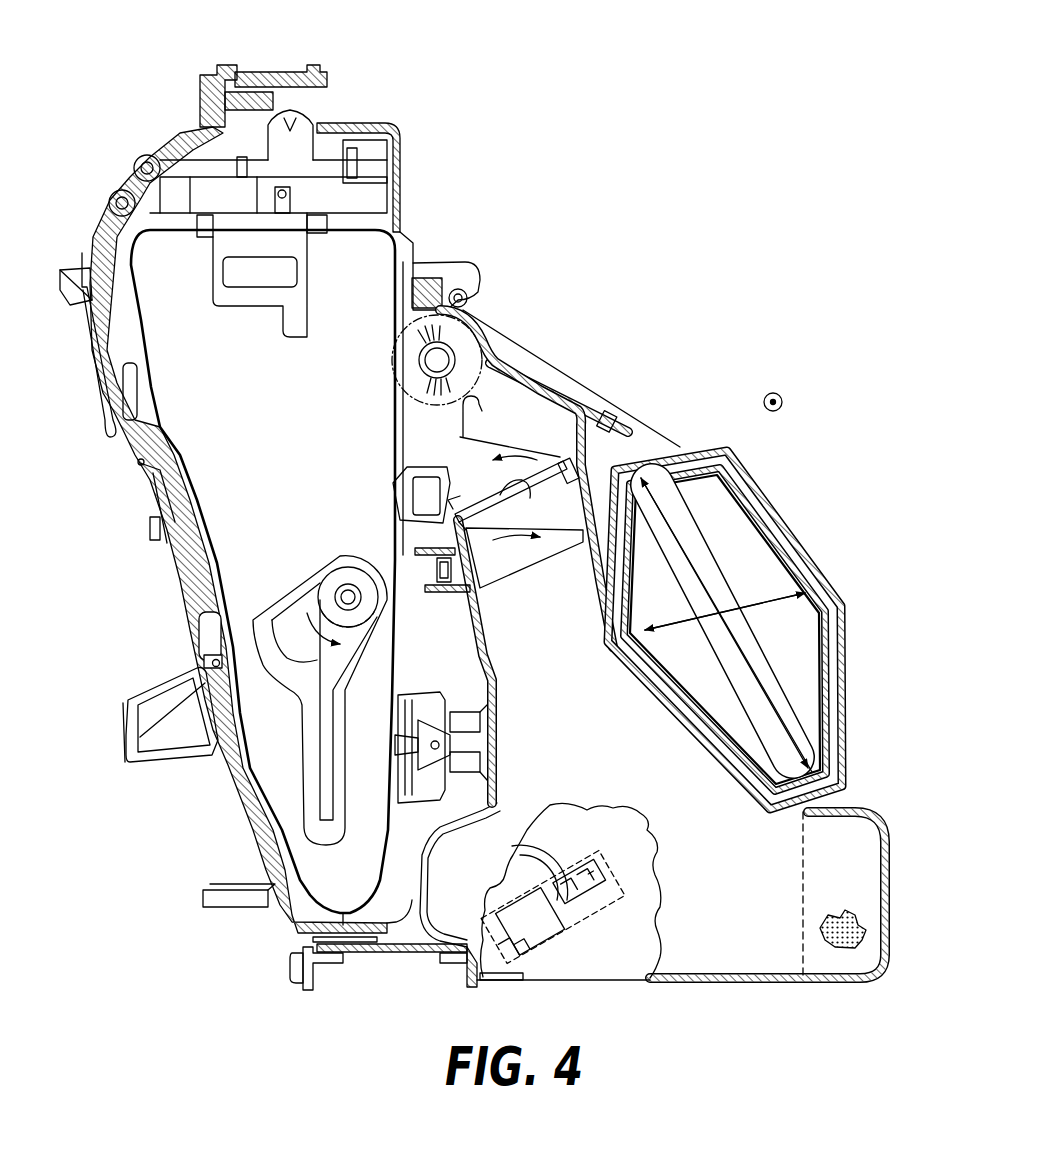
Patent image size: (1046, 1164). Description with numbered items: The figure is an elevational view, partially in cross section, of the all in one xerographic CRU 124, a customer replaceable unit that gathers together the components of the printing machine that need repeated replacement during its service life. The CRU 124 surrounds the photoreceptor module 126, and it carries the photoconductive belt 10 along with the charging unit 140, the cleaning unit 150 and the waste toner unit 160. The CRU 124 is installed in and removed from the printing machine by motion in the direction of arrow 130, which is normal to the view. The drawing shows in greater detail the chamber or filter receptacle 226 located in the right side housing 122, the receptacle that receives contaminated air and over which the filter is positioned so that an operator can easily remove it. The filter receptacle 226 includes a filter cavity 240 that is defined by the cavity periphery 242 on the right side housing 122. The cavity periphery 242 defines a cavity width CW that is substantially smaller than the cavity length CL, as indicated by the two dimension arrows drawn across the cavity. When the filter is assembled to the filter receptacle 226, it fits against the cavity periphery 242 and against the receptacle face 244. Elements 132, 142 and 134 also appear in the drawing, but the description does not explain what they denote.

The xerographic CRU 124 is at (632, 52).
The charging unit 140 is at (330, 155).
The photoconductive belt 10 is at (403, 240).
The photoreceptor module 126 is at (407, 238).
The cleaning unit 150 is at (540, 325).
The pivot bushing 132 is at (535, 388).
The lever 142 is at (553, 470).
The arrow 130 is at (783, 410).
The filter receptacle 226 is at (822, 548).
The filter cavity 240 is at (785, 632).
The cavity periphery 242 is at (760, 772).
The receptacle face 244 is at (787, 788).
The right side housing 122 is at (757, 981).
The seal 134 is at (840, 948).
The waste toner unit 160 is at (852, 986).